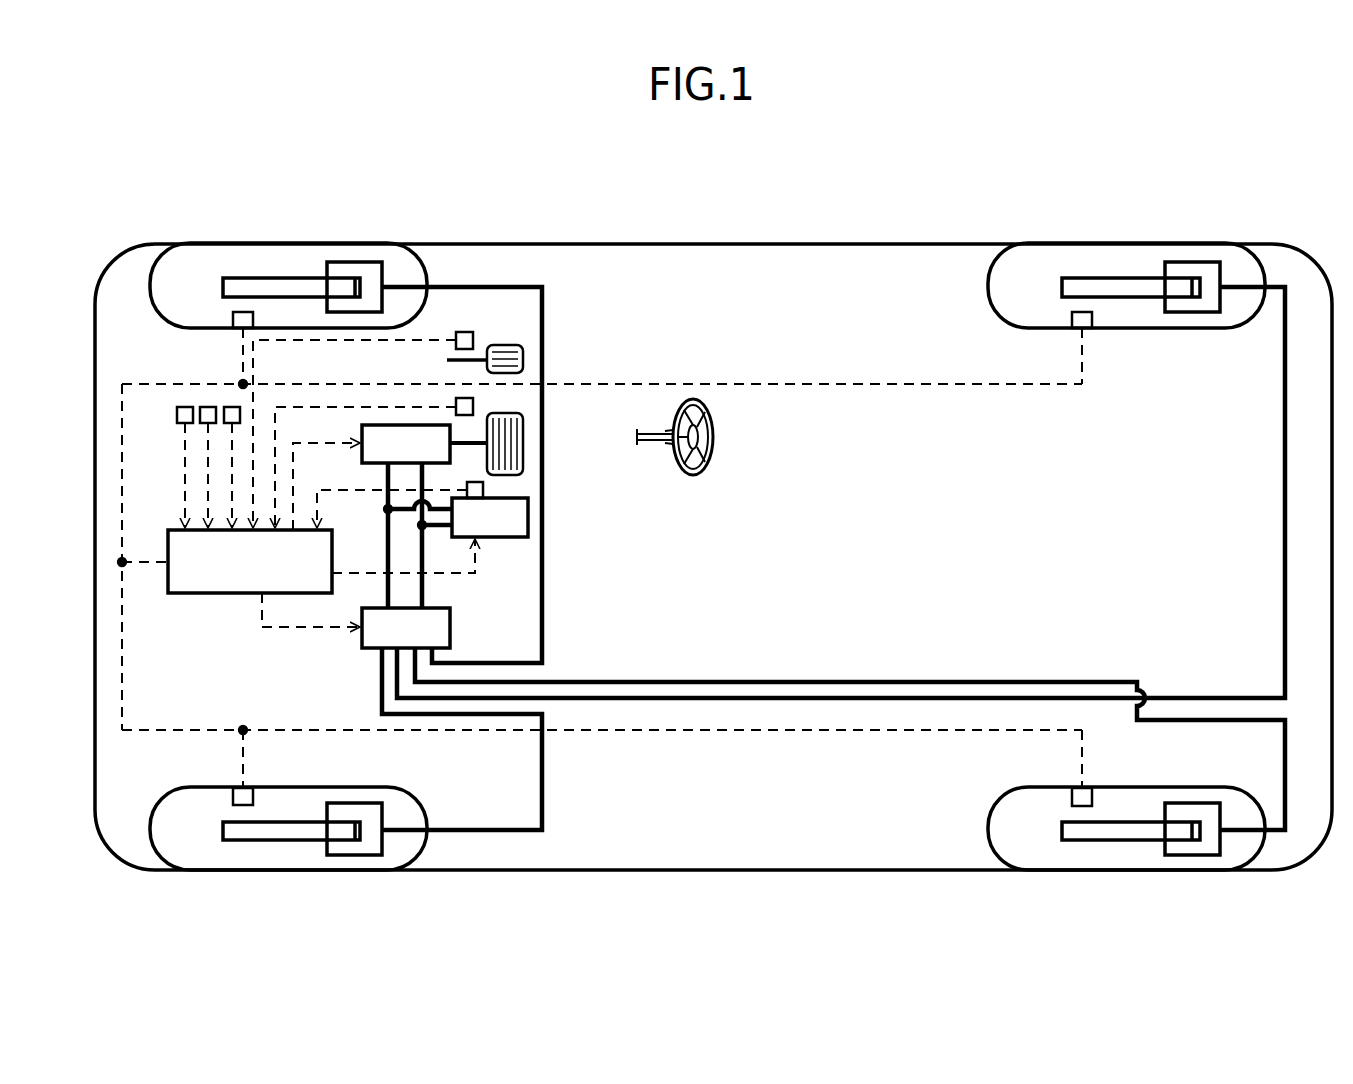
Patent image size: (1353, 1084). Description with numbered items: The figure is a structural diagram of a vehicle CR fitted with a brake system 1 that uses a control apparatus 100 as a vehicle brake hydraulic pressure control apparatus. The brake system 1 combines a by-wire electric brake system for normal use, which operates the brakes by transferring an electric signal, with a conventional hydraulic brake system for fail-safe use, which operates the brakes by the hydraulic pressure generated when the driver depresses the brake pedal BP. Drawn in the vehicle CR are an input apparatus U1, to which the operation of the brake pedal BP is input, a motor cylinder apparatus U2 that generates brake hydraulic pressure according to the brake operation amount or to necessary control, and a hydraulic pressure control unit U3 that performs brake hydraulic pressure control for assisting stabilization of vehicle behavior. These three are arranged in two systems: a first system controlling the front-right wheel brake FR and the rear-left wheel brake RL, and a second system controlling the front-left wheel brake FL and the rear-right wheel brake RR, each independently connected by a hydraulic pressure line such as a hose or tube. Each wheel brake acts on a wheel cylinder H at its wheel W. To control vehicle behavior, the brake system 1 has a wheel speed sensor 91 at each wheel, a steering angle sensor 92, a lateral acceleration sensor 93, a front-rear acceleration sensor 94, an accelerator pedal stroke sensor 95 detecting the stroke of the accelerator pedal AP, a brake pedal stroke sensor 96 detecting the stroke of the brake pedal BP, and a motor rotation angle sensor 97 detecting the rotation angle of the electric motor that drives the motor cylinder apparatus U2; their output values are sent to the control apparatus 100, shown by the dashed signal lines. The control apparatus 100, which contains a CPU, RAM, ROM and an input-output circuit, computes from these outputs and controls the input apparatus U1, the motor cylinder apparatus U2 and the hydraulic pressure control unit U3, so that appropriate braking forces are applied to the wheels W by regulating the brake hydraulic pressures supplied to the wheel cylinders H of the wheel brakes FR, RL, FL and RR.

The brake system 1 is at (148, 466).
The wheel speed sensor 91 is at (233, 318).
The steering angle sensor 92 is at (185, 407).
The lateral acceleration sensor 93 is at (208, 407).
The front-rear acceleration sensor 94 is at (232, 407).
The accelerator pedal stroke sensor 95 is at (464, 332).
The brake pedal stroke sensor 96 is at (473, 405).
The motor rotation angle sensor 97 is at (483, 487).
The control apparatus 100 is at (215, 595).
The vehicle CR is at (740, 233).
The wheels W is at (288, 258).
The wheel cylinders H is at (355, 270).
The front-right wheel brake FR is at (245, 283).
The front-left wheel brake FL is at (245, 835).
The rear-right wheel brake RR is at (1083, 283).
The rear-left wheel brake RL is at (1083, 835).
The accelerator pedal AP is at (510, 345).
The brake pedal BP is at (523, 452).
The input apparatus U1 is at (400, 425).
The motor cylinder apparatus U2 is at (493, 538).
The hydraulic pressure control unit U3 is at (450, 627).